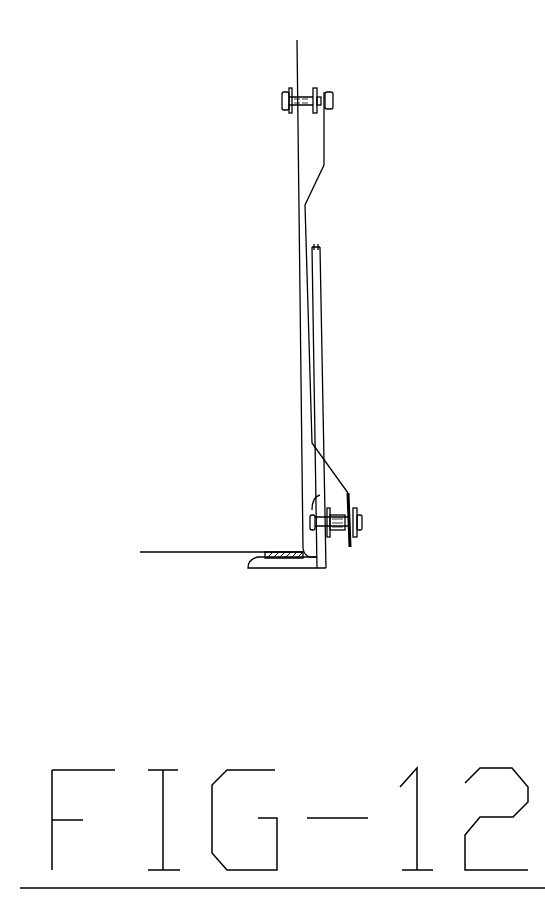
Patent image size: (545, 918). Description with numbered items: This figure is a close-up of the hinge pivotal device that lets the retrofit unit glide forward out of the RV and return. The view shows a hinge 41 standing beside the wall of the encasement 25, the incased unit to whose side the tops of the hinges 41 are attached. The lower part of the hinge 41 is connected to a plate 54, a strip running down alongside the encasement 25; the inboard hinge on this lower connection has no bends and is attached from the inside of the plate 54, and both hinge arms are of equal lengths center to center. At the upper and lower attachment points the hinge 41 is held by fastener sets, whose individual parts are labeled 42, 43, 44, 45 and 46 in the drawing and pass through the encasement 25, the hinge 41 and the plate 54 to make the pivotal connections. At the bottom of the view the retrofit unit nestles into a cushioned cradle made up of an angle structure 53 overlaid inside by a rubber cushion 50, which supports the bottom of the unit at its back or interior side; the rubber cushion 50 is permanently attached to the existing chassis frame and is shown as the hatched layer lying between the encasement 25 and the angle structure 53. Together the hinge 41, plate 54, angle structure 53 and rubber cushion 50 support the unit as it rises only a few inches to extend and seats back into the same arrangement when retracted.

The encasement 25 is at (190, 553).
The hinge 41 is at (316, 182).
The bolt 42 is at (333, 102).
The washer 43 is at (355, 312).
The washer 44 is at (377, 312).
The nut 45 is at (388, 316).
The lock nut 46 is at (401, 313).
The rubber cushion 50 is at (295, 558).
The angle structure 53 is at (273, 570).
The plate 54 is at (322, 338).